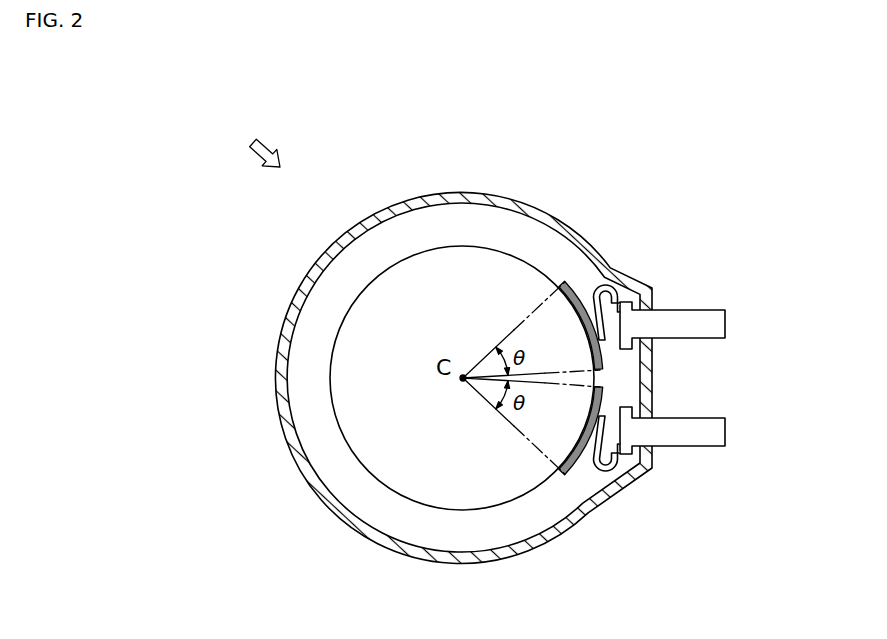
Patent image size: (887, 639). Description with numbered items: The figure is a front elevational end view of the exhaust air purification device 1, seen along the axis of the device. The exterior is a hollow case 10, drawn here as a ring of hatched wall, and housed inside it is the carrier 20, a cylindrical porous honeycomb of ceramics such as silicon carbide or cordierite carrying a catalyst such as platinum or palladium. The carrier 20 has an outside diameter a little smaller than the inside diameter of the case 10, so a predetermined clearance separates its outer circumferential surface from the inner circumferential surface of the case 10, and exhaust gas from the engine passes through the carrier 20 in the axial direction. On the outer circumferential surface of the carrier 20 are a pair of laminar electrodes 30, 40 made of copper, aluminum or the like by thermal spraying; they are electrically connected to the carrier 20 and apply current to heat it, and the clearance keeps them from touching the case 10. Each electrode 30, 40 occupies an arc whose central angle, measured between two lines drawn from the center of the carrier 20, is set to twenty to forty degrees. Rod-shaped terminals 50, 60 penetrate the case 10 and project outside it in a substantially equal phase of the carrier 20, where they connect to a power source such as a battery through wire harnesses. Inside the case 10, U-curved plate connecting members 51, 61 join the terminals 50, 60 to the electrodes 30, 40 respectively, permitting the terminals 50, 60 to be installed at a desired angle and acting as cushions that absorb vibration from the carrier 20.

The exhaust air purification device 1 is at (256, 142).
The case 10 is at (297, 455).
The carrier 20 is at (358, 375).
The electrode 30 is at (563, 284).
The electrode 40 is at (570, 478).
The terminal 50 is at (693, 318).
The connecting member 51 is at (617, 280).
The terminal 60 is at (693, 438).
The connecting member 61 is at (604, 472).